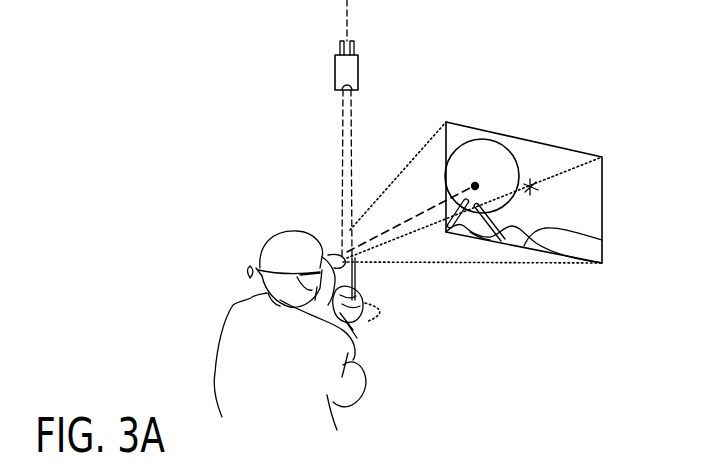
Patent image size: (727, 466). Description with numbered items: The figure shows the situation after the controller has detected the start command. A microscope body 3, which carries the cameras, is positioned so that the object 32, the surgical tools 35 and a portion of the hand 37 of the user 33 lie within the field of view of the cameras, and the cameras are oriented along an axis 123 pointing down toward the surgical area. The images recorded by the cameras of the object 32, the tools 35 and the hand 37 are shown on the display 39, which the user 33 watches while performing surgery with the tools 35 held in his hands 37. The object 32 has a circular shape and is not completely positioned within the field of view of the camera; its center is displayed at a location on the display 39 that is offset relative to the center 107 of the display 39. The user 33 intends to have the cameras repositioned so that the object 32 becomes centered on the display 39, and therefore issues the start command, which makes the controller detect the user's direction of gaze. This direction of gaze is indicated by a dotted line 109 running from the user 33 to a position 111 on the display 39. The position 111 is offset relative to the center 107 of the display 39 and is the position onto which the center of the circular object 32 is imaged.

The microscope body 3 is at (358, 66).
The axis 123 is at (350, 12).
The direction of gaze 109 is at (442, 202).
The position 111 is at (476, 182).
The object 32 is at (500, 143).
The center of the display 107 is at (533, 183).
The display 39 is at (602, 185).
The hand 37 is at (602, 240).
The surgical tools 35 is at (488, 240).
The user 33 is at (268, 232).